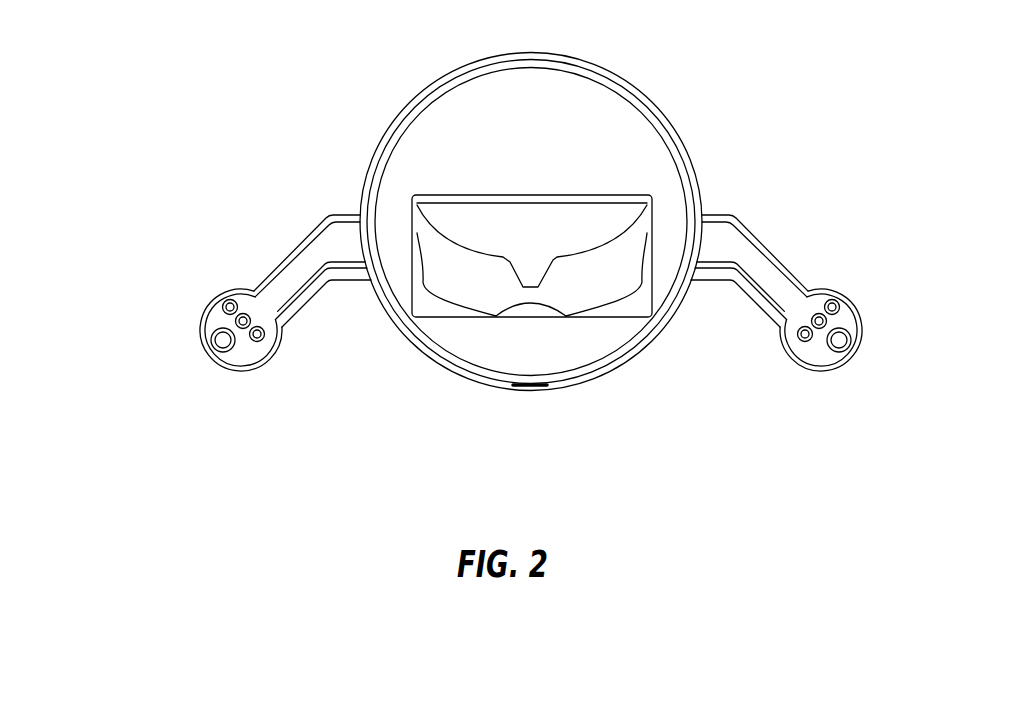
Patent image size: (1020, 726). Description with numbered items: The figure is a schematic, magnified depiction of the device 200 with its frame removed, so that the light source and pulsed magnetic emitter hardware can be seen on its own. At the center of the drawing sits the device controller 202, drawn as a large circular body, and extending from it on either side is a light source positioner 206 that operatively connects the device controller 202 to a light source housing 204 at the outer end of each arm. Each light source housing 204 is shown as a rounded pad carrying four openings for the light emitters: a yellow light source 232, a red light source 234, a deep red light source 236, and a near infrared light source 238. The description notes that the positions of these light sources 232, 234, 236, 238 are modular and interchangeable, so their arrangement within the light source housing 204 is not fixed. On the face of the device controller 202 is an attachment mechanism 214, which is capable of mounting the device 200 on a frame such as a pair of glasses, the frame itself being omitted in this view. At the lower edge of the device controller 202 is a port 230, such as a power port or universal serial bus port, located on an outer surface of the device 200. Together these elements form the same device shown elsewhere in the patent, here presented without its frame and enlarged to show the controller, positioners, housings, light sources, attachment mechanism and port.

The device 200 is at (920, 92).
The device controller 202 is at (660, 114).
The light source housing 204 is at (848, 302).
The light source positioner 206 is at (756, 235).
The attachment mechanism 214 is at (480, 196).
The port 230 is at (528, 392).
The yellow light source 232 is at (243, 313).
The red light source 234 is at (223, 308).
The deep red light source 236 is at (212, 347).
The near infrared light source 238 is at (258, 343).